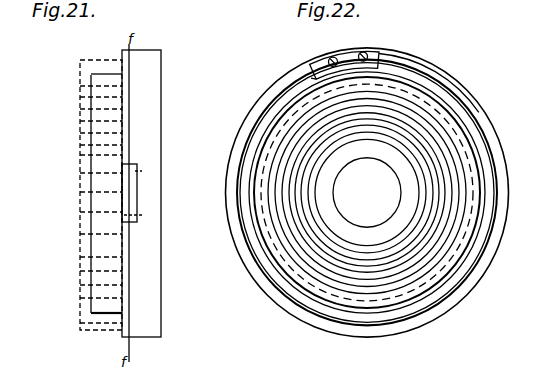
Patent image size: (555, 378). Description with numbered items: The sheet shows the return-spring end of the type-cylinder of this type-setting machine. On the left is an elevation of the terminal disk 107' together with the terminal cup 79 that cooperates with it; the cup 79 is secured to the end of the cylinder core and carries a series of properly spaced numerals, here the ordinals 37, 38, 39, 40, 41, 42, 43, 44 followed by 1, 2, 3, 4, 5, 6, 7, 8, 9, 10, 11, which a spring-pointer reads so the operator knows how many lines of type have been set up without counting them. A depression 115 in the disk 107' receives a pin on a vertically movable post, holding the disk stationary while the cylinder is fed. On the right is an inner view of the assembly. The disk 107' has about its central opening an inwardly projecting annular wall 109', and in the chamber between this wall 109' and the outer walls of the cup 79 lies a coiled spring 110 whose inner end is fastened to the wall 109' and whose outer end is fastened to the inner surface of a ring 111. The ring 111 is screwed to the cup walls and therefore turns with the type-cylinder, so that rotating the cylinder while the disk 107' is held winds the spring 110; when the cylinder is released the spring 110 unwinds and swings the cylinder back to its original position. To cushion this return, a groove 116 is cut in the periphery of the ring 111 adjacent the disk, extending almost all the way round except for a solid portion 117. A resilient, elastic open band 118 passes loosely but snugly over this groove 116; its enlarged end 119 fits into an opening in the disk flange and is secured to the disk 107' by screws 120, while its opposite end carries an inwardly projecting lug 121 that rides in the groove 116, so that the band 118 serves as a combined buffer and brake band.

In FIG. 21, the terminal disk 107' is at (158, 193).
In FIG. 22, the terminal disk 107' is at (367, 192).
In FIG. 22, the inwardly-projecting annular wall 109' is at (367, 190).
In FIG. 22, the coiled spring 110 is at (385, 190).
In FIG. 22, the ring 111 is at (401, 192).
In FIG. 21, the depression 115 is at (91, 194).
In FIG. 22, the groove 116 is at (357, 192).
In FIG. 22, the solid portion 117 is at (367, 187).
In FIG. 22, the open band 118 is at (355, 181).
In FIG. 21, the enlarged end 119 is at (133, 193).
In FIG. 22, the enlarged end 119 is at (348, 47).
In FIG. 22, the screws 120 is at (380, 45).
In FIG. 22, the inwardly-projecting lug 121 is at (341, 55).
In FIG. 21, the cup 79 is at (85, 65).
In FIG. 21, the scale graduation 37 is at (104, 66).
In FIG. 21, the scale graduation 38 is at (104, 75).
In FIG. 21, the scale graduation 39 is at (104, 82).
In FIG. 21, the scale graduation 40 is at (104, 92).
In FIG. 21, the scale graduation 41 is at (103, 103).
In FIG. 21, the scale graduation 42 is at (104, 115).
In FIG. 21, the scale graduation 43 is at (104, 127).
In FIG. 21, the scale graduation 44 is at (104, 141).
In FIG. 21, the scale graduation 1 is at (104, 157).
In FIG. 21, the scale graduation 2 is at (104, 180).
In FIG. 21, the scale graduation 3 is at (100, 197).
In FIG. 21, the scale graduation 4 is at (104, 220).
In FIG. 21, the scale graduation 5 is at (104, 243).
In FIG. 21, the scale graduation 6 is at (104, 263).
In FIG. 21, the scale graduation 7 is at (104, 277).
In FIG. 21, the scale graduation 8 is at (104, 291).
In FIG. 21, the scale graduation 9 is at (104, 305).
In FIG. 21, the scale graduation 10 is at (103, 318).
In FIG. 21, the scale graduation 11 is at (103, 327).